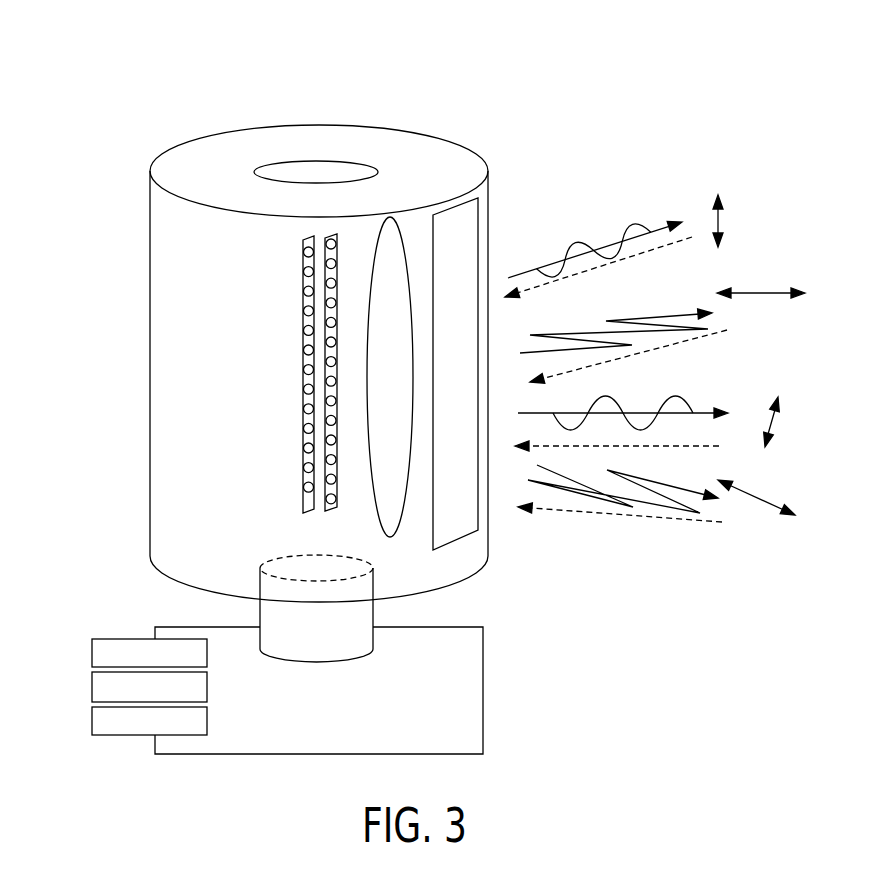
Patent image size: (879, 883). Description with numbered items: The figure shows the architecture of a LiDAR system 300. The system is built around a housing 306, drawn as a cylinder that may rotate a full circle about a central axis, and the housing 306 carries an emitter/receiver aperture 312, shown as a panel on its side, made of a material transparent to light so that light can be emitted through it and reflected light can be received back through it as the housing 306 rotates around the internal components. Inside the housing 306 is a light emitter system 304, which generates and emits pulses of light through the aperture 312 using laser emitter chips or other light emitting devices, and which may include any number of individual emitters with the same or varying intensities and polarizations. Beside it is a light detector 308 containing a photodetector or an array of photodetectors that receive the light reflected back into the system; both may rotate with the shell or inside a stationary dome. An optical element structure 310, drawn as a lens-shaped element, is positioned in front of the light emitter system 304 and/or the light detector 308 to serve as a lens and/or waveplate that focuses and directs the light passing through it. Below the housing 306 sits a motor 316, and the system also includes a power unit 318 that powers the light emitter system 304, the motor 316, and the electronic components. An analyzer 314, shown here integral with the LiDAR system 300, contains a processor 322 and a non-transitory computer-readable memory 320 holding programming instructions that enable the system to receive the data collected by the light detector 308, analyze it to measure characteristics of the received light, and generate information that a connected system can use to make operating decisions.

The LiDAR system 300 is at (220, 89).
The light emitter system 304 is at (328, 236).
The housing 306 is at (150, 222).
The light detector 308 is at (302, 249).
The optical element structure 310 is at (390, 217).
The emitter/receiver aperture 312 is at (464, 202).
The analyzer 314 is at (483, 690).
The motor 316 is at (325, 648).
The power unit 318 is at (105, 653).
The non-transitory computer-readable memory 320 is at (105, 690).
The processor 322 is at (105, 722).